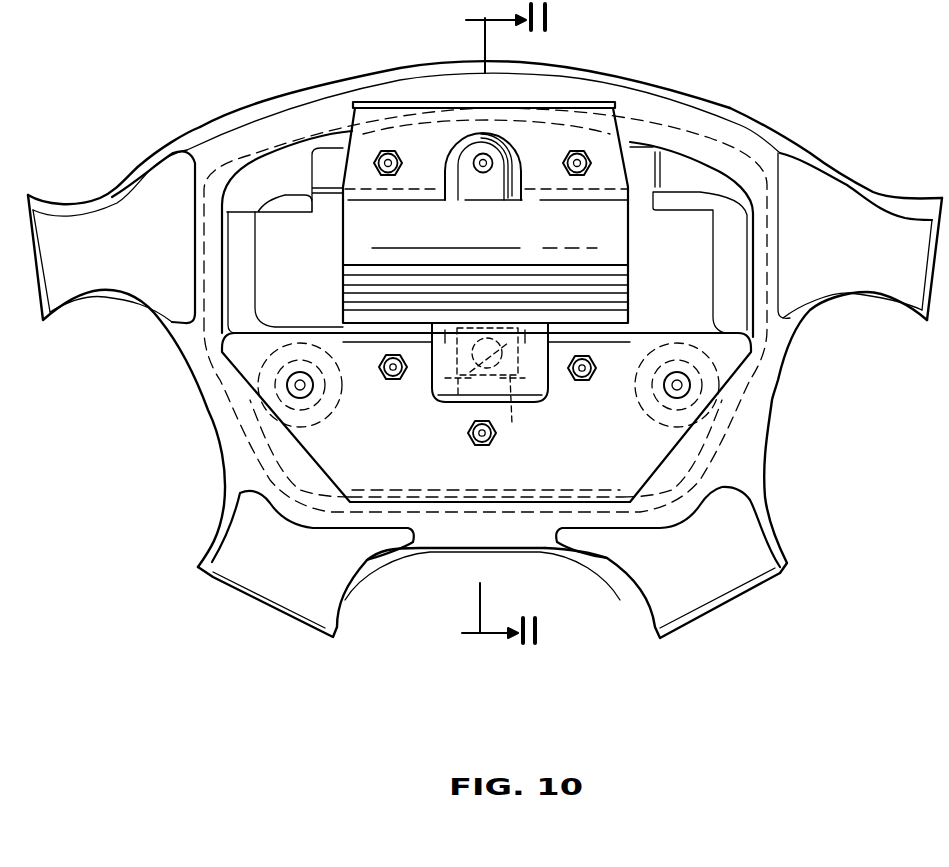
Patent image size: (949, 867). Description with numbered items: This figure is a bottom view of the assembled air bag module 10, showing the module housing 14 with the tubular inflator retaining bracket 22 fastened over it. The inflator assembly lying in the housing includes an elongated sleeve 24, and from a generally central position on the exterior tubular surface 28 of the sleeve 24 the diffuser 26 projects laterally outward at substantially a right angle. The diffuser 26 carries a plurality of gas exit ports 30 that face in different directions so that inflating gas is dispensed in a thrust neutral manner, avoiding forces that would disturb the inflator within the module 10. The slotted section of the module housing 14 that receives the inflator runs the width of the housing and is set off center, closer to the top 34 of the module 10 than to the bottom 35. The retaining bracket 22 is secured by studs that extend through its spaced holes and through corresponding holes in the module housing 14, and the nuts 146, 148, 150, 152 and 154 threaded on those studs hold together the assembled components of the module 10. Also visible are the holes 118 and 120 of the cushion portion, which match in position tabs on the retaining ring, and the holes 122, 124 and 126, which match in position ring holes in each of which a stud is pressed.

The air bag module 10 is at (728, 101).
The module housing 14 is at (287, 450).
The tubular inflator retaining bracket 22 is at (660, 463).
The sleeve 24 is at (277, 200).
The diffuser 26 is at (509, 410).
The exterior tubular surface 28 is at (343, 325).
The gas exit ports 30 is at (460, 392).
The top of the module 34 is at (330, 79).
The bottom of the module 35 is at (432, 550).
The hole in cushion portion 118 is at (588, 160).
The hole in cushion portion 120 is at (580, 378).
The hole in cushion portion 122 is at (492, 448).
The hole in cushion portion 124 is at (387, 383).
The hole in cushion portion 126 is at (377, 160).
The nut 146 is at (574, 153).
The nut 148 is at (388, 153).
The nut 150 is at (405, 383).
The nut 152 is at (470, 452).
The nut 154 is at (572, 384).